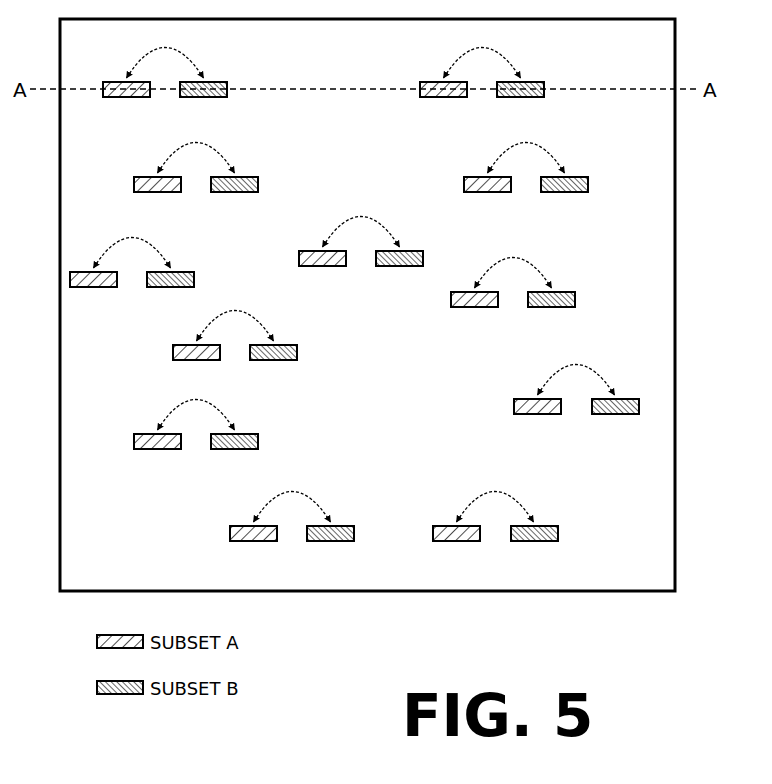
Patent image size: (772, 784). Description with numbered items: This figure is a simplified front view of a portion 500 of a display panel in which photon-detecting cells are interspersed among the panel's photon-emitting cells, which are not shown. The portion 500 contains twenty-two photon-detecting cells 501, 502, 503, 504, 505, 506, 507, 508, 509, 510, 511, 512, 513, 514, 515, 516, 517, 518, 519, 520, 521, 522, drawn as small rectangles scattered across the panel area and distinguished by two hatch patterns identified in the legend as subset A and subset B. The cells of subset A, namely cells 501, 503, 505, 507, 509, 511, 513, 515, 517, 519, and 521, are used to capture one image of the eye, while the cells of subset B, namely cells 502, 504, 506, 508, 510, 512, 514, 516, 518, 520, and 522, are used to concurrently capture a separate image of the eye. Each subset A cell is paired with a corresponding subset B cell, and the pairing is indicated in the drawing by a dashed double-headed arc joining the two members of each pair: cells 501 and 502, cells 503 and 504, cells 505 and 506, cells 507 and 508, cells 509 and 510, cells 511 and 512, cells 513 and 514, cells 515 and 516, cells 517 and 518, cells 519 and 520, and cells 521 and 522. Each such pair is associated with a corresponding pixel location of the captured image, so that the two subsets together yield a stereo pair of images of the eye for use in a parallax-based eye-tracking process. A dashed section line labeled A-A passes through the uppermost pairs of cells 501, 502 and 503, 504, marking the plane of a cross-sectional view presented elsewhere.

The portion of the display panel 500 is at (679, 545).
The photon-detecting cell 501 is at (126, 97).
The photon-detecting cell 502 is at (203, 97).
The photon-detecting cell 503 is at (443, 97).
The photon-detecting cell 504 is at (520, 97).
The photon-detecting cell 505 is at (157, 192).
The photon-detecting cell 506 is at (234, 192).
The photon-detecting cell 507 is at (487, 192).
The photon-detecting cell 508 is at (564, 192).
The photon-detecting cell 509 is at (93, 287).
The photon-detecting cell 510 is at (170, 287).
The photon-detecting cell 511 is at (322, 266).
The photon-detecting cell 512 is at (399, 266).
The photon-detecting cell 513 is at (474, 307).
The photon-detecting cell 514 is at (551, 307).
The photon-detecting cell 515 is at (196, 360).
The photon-detecting cell 516 is at (273, 360).
The photon-detecting cell 517 is at (537, 414).
The photon-detecting cell 518 is at (615, 414).
The photon-detecting cell 519 is at (253, 541).
The photon-detecting cell 520 is at (330, 541).
The photon-detecting cell 521 is at (456, 541).
The photon-detecting cell 522 is at (534, 541).